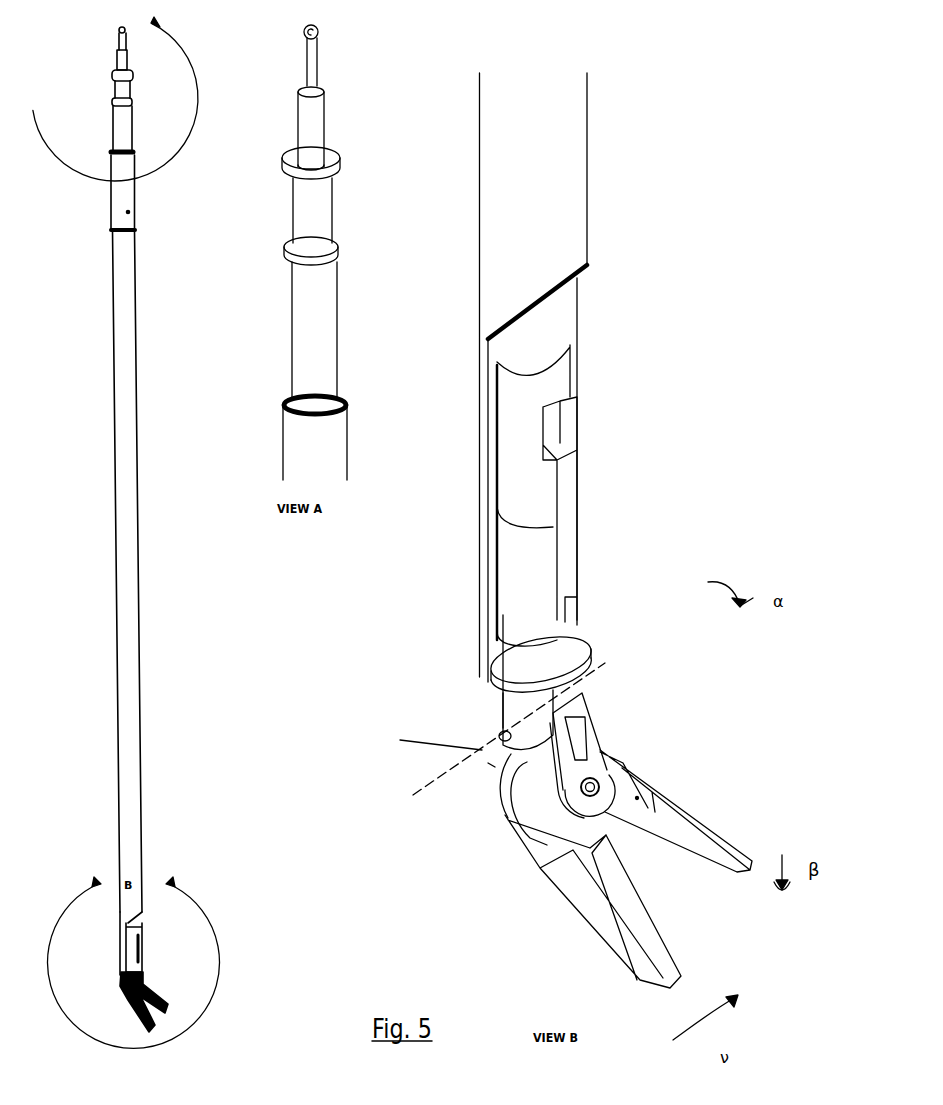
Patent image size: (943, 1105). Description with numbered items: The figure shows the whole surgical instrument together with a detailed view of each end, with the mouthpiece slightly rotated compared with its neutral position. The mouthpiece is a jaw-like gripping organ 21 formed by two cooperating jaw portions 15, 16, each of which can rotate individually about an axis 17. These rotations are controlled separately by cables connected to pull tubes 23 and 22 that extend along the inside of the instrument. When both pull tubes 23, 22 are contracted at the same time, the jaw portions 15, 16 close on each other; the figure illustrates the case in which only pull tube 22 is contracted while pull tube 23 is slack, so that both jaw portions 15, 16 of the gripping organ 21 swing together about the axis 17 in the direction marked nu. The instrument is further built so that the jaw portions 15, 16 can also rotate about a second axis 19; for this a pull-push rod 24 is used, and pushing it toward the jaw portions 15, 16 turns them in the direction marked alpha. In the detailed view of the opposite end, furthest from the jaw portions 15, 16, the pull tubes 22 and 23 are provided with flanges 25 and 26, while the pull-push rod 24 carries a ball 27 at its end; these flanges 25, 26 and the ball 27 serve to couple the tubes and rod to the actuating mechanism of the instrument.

The jaw portion 15 is at (705, 835).
The jaw portion 16 is at (645, 970).
The axis 17 is at (712, 818).
The axis 19 is at (670, 620).
The jaw-like gripping organ 21 is at (622, 793).
The pull tube 22 is at (321, 336).
The pull tube 23 is at (318, 209).
The pull-push rod 24 is at (316, 126).
The flange 25 is at (340, 251).
The flange 26 is at (335, 161).
The ball 27 is at (318, 33).